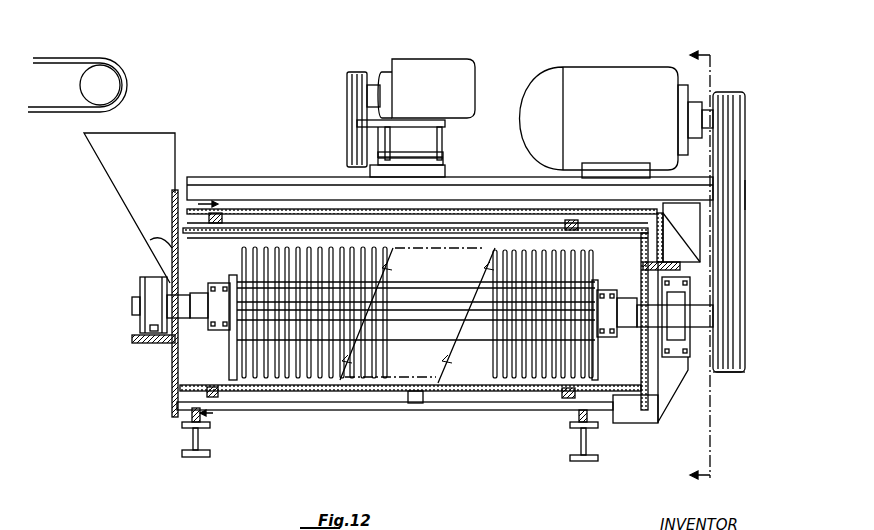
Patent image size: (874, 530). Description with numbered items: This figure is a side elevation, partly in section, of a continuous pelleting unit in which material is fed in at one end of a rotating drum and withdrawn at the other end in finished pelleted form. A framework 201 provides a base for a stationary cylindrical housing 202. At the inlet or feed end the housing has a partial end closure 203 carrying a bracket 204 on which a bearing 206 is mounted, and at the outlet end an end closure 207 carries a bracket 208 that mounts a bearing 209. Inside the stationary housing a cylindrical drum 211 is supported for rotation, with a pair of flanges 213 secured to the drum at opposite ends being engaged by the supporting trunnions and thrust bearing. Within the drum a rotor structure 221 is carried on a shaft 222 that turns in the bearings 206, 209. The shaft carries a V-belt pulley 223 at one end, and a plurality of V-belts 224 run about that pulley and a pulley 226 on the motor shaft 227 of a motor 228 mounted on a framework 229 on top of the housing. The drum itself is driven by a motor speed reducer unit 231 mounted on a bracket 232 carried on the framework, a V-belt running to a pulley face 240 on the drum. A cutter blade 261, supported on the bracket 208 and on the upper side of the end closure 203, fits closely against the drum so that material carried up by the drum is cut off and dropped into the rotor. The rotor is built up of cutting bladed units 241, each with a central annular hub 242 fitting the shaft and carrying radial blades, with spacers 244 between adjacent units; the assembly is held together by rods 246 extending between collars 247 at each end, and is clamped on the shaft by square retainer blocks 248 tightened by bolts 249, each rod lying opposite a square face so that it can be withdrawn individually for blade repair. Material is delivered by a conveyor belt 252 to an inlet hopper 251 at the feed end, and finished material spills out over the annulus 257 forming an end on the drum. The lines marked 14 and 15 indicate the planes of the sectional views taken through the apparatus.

The conveyor belt 252 is at (65, 59).
The inlet hopper 251 is at (178, 141).
The flanges 213 is at (240, 198).
The cutting bladed units 241 is at (278, 243).
The cutter blade 261 is at (318, 235).
The motor speed reducer unit 231 is at (432, 58).
The bracket 232 is at (442, 133).
The framework 229 is at (459, 177).
The motor 228 is at (627, 67).
The section line 14 is at (704, 267).
The motor shaft 227 is at (745, 120).
The pulley 226 is at (746, 141).
The V-belts 224 is at (746, 193).
The bracket 208 is at (683, 250).
The bearing 209 is at (678, 298).
The central annular hub 242 is at (627, 303).
The bearing 206 is at (140, 283).
The shaft 222 is at (132, 306).
The rods 246 is at (273, 282).
The bolts 249 is at (213, 290).
The square retainer blocks 248 is at (210, 318).
The spacers 244 is at (250, 345).
The bracket 204 is at (150, 340).
The partial end closure 203 is at (172, 368).
The framework 201 is at (200, 441).
The rotor structure 221 is at (318, 345).
The cylindrical drum 211 is at (365, 388).
The pulley face 240 is at (418, 403).
The stationary cylindrical housing 202 is at (437, 405).
The annulus 257 is at (643, 387).
The end closure 207 is at (668, 403).
The collars 247 is at (596, 336).
The V-belt pulley 223 is at (733, 372).
The section line 15 is at (215, 303).